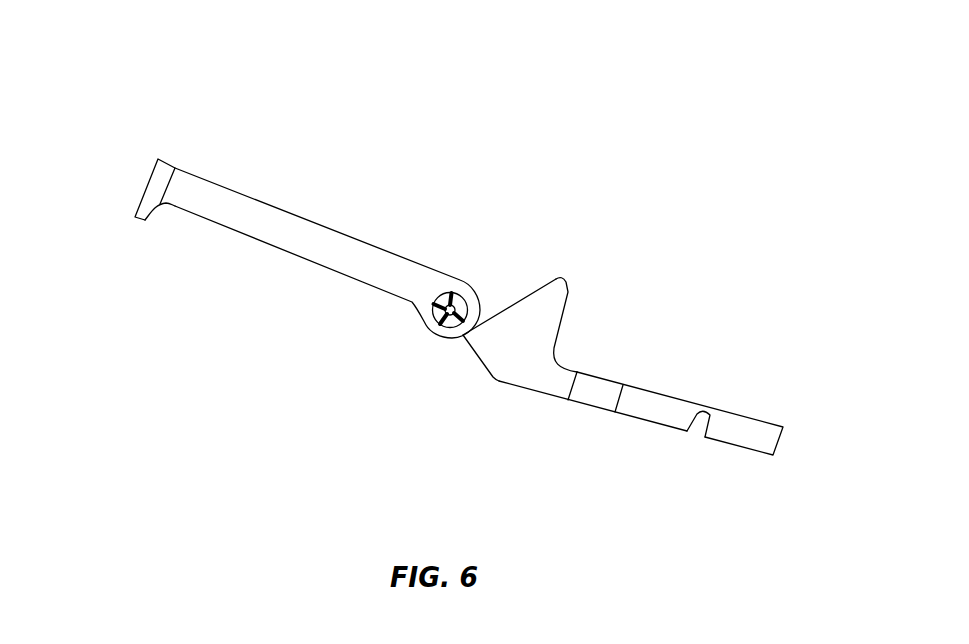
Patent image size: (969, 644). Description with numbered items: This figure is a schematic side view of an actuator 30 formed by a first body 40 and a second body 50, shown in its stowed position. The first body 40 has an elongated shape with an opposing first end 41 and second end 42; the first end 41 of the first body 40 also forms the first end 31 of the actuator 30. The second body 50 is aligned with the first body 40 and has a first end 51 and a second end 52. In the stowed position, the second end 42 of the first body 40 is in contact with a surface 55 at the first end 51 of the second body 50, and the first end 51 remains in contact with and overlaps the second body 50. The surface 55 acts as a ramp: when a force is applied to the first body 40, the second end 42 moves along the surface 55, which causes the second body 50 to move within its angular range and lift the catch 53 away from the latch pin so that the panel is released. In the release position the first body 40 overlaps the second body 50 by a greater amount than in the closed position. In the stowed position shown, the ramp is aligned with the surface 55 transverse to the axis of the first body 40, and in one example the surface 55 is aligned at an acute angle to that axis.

The actuator 30 is at (540, 150).
The first end of the actuator 31 is at (150, 178).
The first body 40 is at (263, 213).
The first end of the first body 41 is at (142, 197).
The second end of the first body 42 is at (480, 305).
The second body 50 is at (543, 312).
The first end of the second body 51 is at (462, 336).
The second end of the second body 52 is at (779, 440).
The catch 53 is at (697, 428).
The surface 55 is at (521, 298).